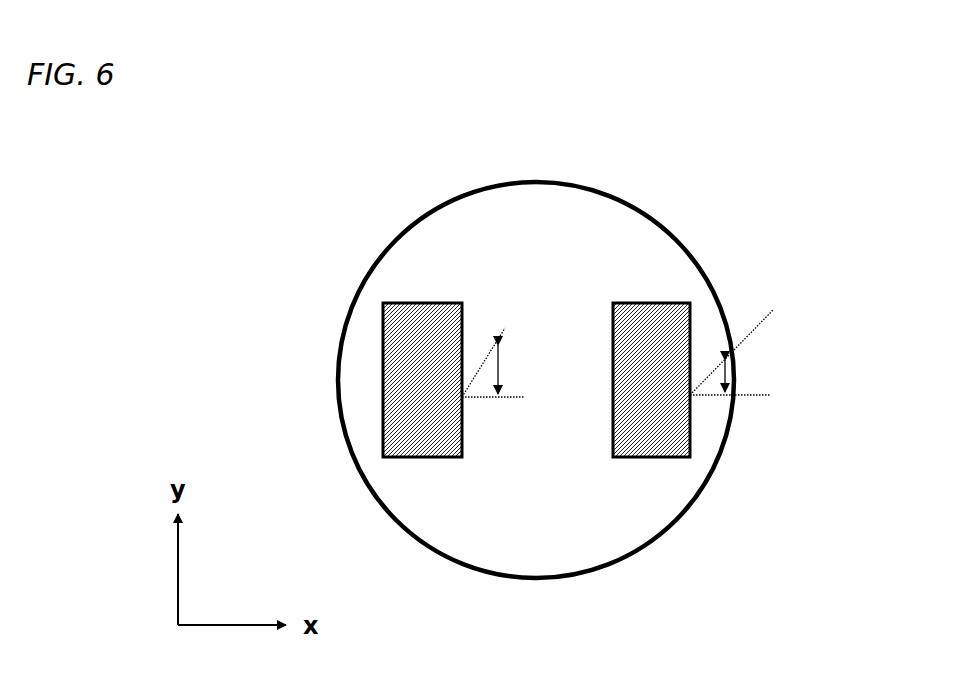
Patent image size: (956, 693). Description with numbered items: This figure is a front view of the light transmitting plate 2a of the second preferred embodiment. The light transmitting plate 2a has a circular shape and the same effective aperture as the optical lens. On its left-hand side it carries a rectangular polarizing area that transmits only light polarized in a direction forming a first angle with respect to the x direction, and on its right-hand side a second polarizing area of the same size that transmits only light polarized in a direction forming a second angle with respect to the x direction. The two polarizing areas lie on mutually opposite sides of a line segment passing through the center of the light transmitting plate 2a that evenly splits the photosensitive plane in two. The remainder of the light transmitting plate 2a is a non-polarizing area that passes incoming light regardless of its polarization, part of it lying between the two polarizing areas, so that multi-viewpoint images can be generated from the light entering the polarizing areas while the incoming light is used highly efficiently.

The light transmitting plate 2a is at (657, 213).